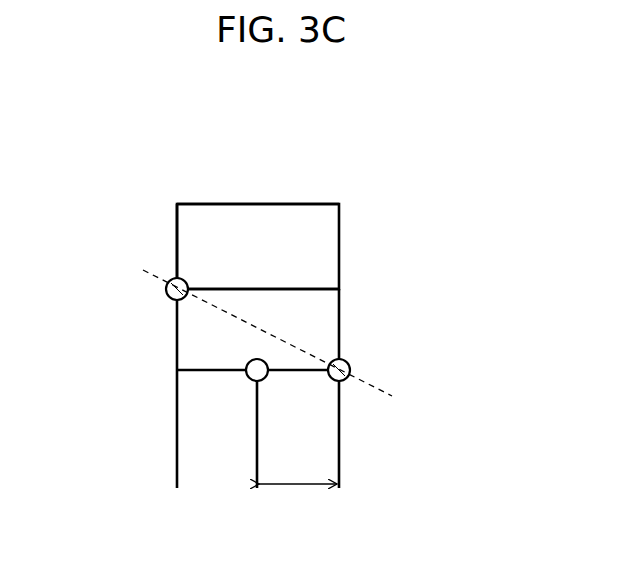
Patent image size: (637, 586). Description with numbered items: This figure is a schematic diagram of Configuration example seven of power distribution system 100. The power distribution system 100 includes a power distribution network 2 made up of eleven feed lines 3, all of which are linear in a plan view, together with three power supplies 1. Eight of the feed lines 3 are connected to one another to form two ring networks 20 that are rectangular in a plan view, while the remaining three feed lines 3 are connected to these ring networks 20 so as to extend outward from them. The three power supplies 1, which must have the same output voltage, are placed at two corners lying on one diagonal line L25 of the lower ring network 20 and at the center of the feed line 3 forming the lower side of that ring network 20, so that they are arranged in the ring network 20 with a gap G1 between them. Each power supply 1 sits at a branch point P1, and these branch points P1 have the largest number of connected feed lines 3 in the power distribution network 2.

The power distribution system 100 is at (265, 314).
The ring network 20 is at (214, 205).
The feed line 3 is at (265, 204).
The power distribution network 2 is at (340, 222).
The power supply 1 is at (185, 277).
The branch point P1 is at (166, 297).
The diagonal line L25 is at (380, 393).
The gap G1 is at (298, 501).